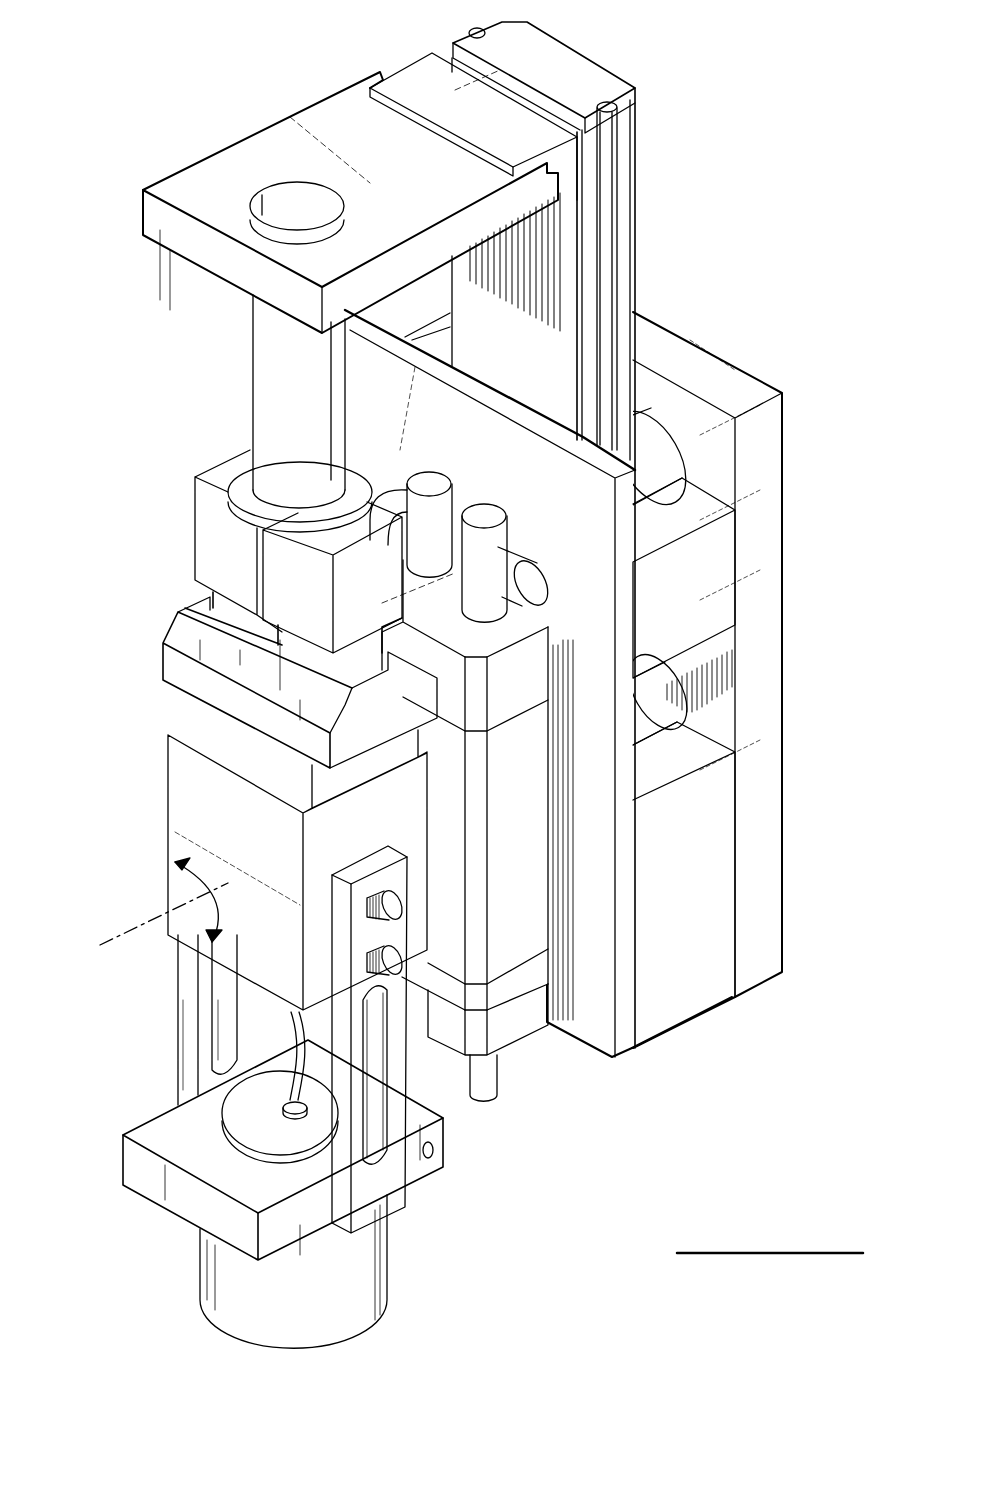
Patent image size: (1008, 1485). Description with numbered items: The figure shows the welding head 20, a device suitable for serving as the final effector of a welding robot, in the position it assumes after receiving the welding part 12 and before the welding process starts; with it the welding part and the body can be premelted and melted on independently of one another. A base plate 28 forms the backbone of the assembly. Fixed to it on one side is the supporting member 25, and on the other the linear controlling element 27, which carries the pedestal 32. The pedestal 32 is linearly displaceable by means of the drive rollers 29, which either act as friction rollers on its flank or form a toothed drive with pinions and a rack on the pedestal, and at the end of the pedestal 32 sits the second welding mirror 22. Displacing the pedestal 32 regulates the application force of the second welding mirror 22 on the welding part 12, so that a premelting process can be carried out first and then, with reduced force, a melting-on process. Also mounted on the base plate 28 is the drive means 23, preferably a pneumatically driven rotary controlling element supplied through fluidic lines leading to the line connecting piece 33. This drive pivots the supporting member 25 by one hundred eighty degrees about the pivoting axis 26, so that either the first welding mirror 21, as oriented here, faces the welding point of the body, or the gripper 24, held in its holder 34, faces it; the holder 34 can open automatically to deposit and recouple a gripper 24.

The welding head 20 is at (717, 255).
The second welding mirror 22 is at (424, 171).
The pedestal 32 is at (512, 360).
The base plate 28 is at (757, 532).
The drive rollers 29 is at (647, 447).
The linear controlling element 27 is at (695, 630).
The welding part 12 is at (305, 424).
The gripper 24 is at (222, 528).
The line connecting piece 33 is at (490, 500).
The holder 34 is at (183, 668).
The supporting member 25 is at (254, 818).
The pivoting axis 26 is at (168, 913).
The drive means 23 is at (529, 865).
The first welding mirror 21 is at (380, 1260).